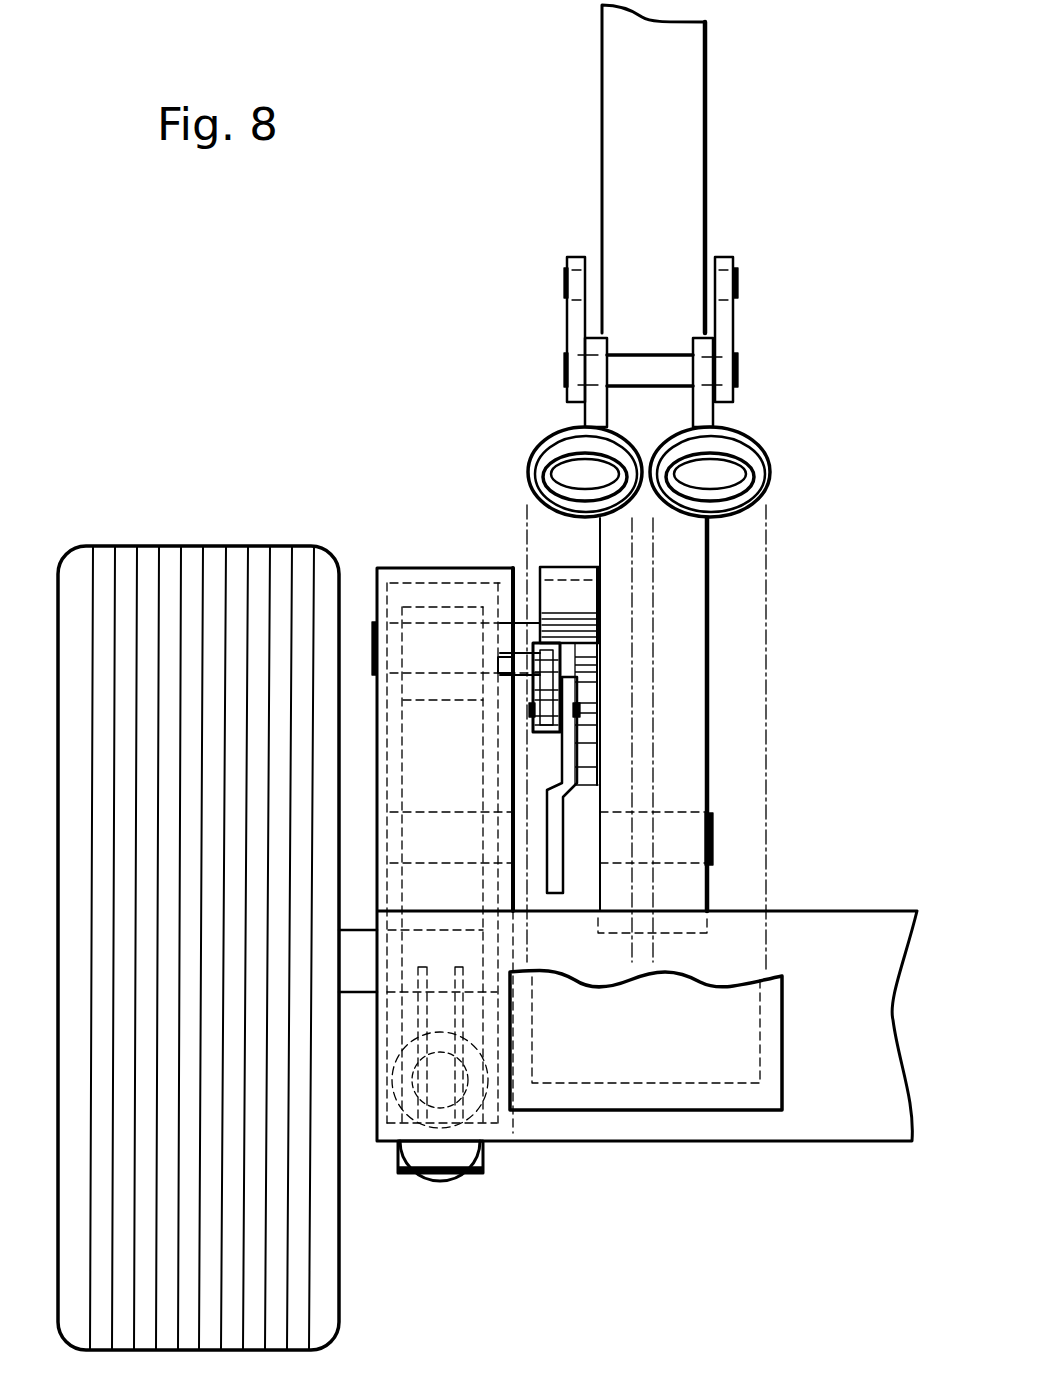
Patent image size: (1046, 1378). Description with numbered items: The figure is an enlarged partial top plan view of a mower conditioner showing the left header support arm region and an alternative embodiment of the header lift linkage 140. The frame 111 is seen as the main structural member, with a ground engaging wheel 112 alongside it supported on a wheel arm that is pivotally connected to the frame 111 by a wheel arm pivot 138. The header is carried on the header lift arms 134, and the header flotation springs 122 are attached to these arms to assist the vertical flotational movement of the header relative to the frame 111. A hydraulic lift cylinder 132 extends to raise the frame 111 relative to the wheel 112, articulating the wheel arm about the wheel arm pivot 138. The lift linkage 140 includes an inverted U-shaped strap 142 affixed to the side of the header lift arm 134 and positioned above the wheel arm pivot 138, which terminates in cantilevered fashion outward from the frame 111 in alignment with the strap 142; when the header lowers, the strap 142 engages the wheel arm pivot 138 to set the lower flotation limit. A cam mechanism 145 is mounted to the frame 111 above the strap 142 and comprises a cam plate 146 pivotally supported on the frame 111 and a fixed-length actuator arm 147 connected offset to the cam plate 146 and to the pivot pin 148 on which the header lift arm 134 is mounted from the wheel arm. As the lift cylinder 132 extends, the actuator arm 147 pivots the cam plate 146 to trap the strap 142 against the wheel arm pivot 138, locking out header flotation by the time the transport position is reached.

The frame 111 is at (413, 572).
The ground engaging wheels 112 is at (130, 550).
The header flotation springs 122 is at (750, 445).
The hydraulic lift cylinders 132 is at (443, 1160).
The header lift arms 134 is at (602, 172).
The wheel arm pivot 138 is at (368, 635).
The header lift linkage 140 is at (489, 501).
The inverted U-shaped strap 142 is at (573, 595).
The cam mechanism 145 is at (670, 707).
The cam plate 146 is at (597, 650).
The actuator arm 147 is at (600, 797).
The pivot pin 148 is at (575, 830).